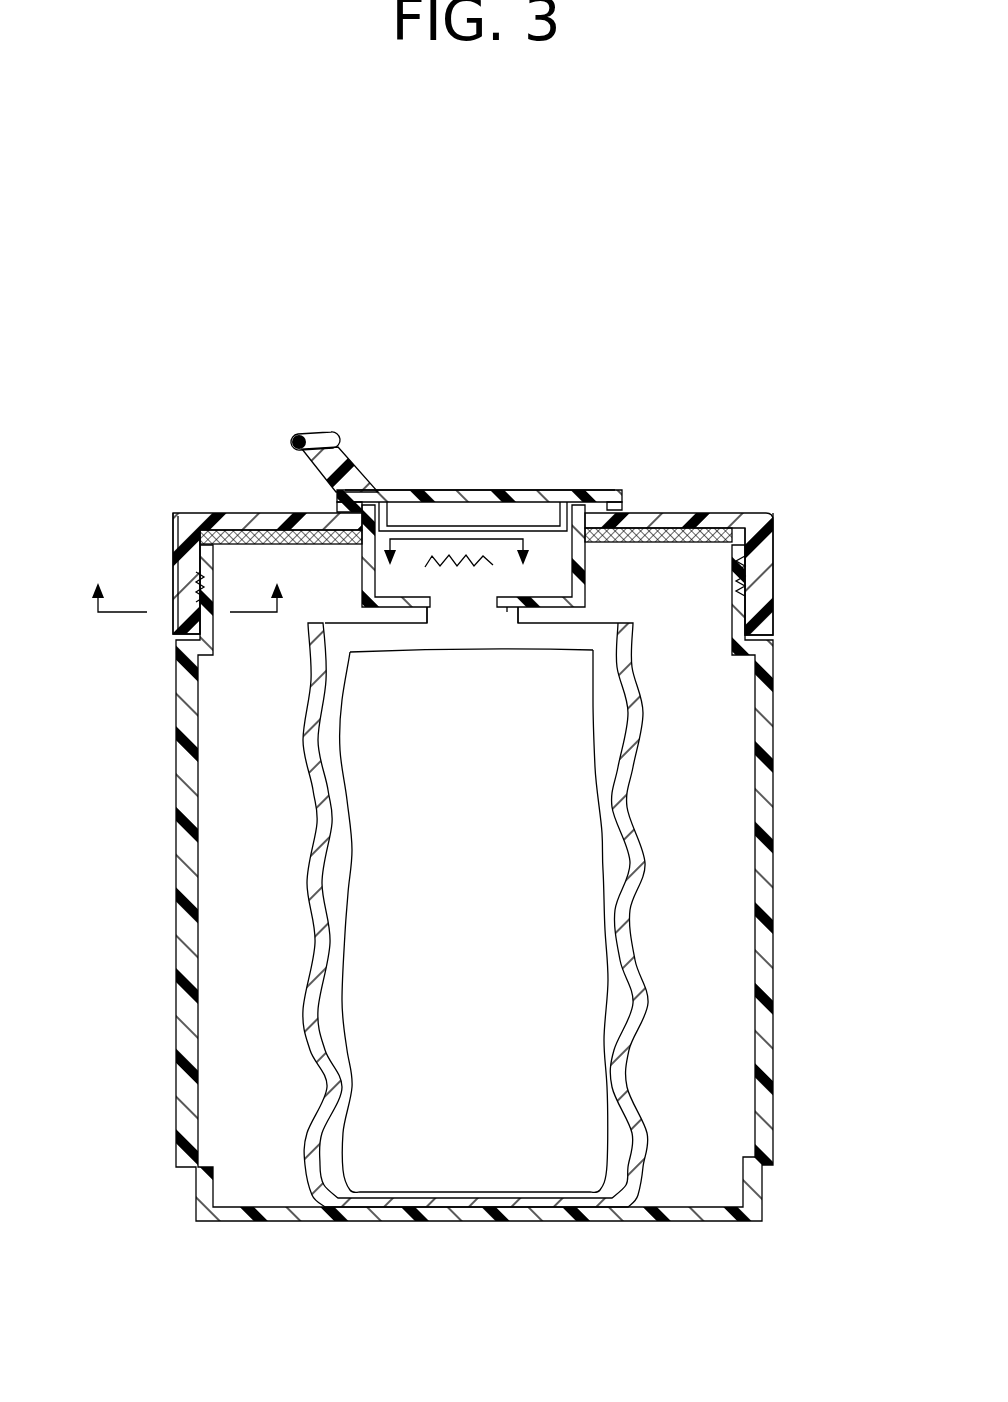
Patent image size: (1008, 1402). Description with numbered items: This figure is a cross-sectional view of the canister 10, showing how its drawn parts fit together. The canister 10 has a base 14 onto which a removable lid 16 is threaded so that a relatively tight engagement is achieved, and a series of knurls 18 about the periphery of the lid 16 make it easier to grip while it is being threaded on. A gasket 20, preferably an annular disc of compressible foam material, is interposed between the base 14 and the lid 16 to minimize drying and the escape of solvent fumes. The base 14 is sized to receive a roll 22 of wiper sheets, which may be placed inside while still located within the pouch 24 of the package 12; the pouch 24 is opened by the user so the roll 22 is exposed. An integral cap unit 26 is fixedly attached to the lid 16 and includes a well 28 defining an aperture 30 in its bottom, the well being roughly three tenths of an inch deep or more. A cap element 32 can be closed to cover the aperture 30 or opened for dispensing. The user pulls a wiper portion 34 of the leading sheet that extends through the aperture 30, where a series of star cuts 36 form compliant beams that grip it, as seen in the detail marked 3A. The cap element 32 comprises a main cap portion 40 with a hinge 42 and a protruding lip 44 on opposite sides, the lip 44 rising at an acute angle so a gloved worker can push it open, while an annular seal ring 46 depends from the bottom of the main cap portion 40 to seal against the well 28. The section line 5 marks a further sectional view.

The canister 10 is at (815, 780).
The package 12 is at (668, 1050).
The base 14 is at (772, 900).
The lid 16 is at (685, 512).
The knurls 18 is at (173, 530).
The gasket 20 is at (340, 545).
The roll 22 is at (498, 1155).
The pouch 24 is at (632, 923).
The cap unit 26 is at (542, 447).
The well 28 is at (587, 565).
The aperture 30 is at (507, 607).
The cap element 32 is at (458, 476).
The wiper portion 34 is at (425, 567).
The star cuts 36 is at (493, 565).
The main cap portion 40 is at (520, 492).
The hinge 42 is at (620, 507).
The protruding lip 44 is at (340, 463).
The seal ring 46 is at (522, 518).
The section line 5- 5 is at (187, 582).
The detail view 3A is at (463, 569).